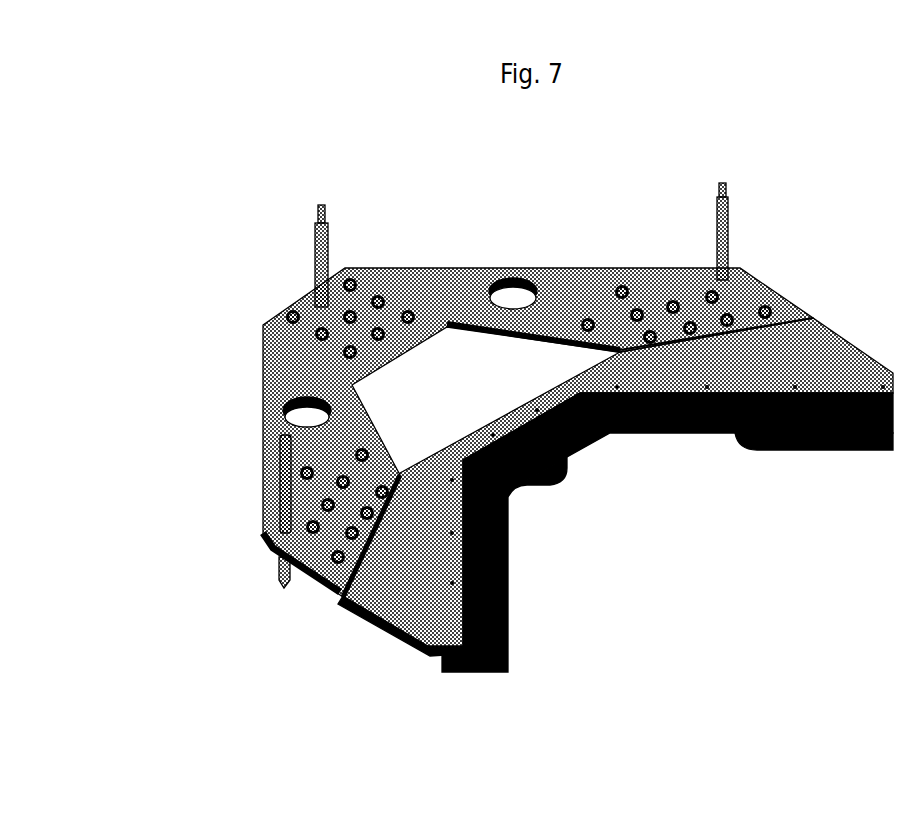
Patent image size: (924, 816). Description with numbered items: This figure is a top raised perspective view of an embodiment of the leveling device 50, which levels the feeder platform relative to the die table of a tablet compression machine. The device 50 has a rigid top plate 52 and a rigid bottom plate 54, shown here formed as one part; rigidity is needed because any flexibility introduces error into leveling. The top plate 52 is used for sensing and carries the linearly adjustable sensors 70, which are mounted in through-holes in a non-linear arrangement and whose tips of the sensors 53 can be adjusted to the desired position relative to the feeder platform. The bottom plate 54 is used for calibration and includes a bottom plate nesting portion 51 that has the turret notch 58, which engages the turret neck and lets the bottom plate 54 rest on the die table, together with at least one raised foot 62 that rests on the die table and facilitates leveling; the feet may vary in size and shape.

The leveling device 50 is at (840, 194).
The bottom plate nesting portion 51 is at (507, 592).
The top plate 52 is at (270, 351).
The tips of the sensors 53 is at (277, 578).
The bottom plate 54 is at (362, 613).
The turret notch 58 is at (586, 529).
The raised foot 62 is at (772, 450).
The adjustable sensors 70 is at (716, 223).